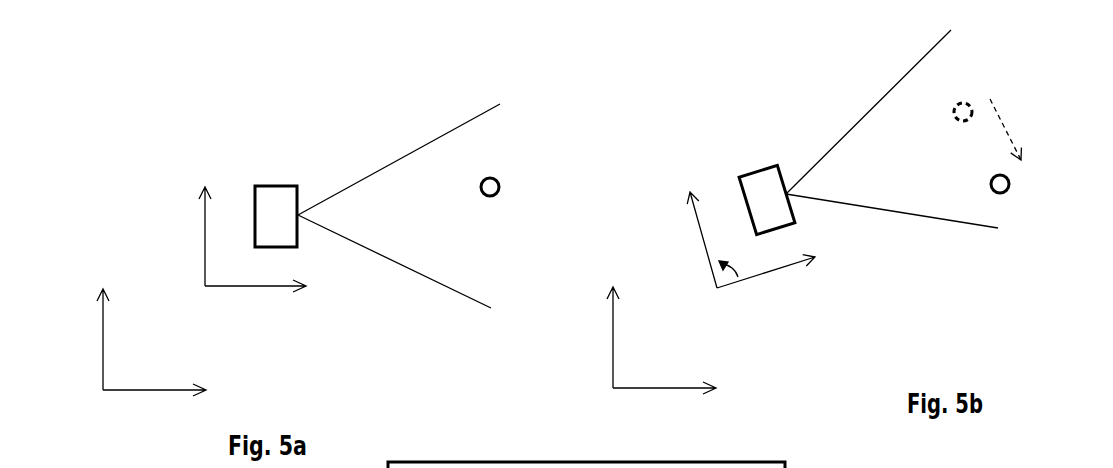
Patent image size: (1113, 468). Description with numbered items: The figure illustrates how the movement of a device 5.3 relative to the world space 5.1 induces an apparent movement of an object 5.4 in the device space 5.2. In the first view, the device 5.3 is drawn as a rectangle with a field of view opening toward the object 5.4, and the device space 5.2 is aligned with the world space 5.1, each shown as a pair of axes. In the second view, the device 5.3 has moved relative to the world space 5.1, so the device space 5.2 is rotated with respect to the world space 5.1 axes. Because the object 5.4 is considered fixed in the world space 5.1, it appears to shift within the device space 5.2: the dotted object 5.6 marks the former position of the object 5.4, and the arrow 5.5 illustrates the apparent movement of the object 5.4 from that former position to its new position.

In FIG. 5A, the world space 5.1 is at (103, 390).
In FIG. 5B, the world space 5.1 is at (613, 388).
In FIG. 5A, the device space 5.2 is at (205, 286).
In FIG. 5B, the device space 5.2 is at (717, 288).
In FIG. 5A, the device 5.3 is at (277, 186).
In FIG. 5B, the device 5.3 is at (757, 168).
In FIG. 5A, the object 5.4 is at (500, 186).
In FIG. 5B, the object 5.4 is at (1010, 184).
In FIG. 5B, the arrow 5.5 is at (1003, 124).
In FIG. 5B, the dotted object 5.6 is at (974, 104).